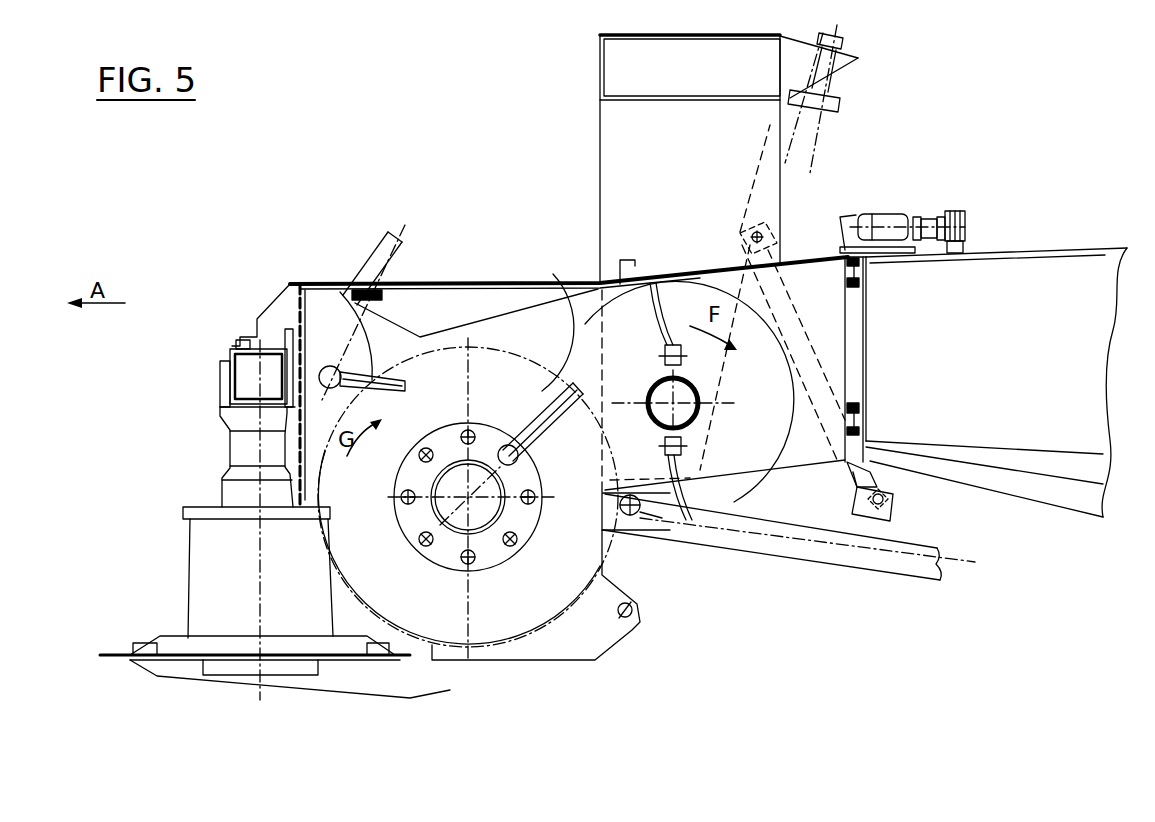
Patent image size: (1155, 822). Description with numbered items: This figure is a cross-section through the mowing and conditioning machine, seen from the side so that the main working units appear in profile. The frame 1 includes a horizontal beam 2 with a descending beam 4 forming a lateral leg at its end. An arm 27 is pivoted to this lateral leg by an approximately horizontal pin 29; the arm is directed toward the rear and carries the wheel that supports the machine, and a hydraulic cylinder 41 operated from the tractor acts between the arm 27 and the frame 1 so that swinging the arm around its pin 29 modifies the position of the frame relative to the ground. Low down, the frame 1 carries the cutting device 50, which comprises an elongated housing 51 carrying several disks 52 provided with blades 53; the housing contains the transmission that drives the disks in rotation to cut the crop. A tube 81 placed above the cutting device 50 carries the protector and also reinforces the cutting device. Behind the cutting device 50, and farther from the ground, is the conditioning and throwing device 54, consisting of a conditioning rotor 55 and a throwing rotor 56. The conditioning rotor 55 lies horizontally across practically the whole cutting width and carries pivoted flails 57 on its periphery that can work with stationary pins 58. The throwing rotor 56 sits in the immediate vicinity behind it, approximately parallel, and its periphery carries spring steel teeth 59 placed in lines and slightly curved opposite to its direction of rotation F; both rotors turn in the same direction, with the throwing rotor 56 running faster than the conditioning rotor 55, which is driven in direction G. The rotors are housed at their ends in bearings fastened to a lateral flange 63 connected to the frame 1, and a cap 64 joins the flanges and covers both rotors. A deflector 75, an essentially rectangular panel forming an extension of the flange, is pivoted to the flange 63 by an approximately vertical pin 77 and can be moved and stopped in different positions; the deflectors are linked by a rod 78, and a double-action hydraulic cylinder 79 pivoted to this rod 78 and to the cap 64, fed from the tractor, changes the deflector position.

The frame 1 is at (594, 72).
The horizontal beam 2 is at (618, 88).
The descending beam 4 is at (606, 172).
The arm 27 is at (880, 565).
The pin 29 is at (636, 525).
The hydraulic cylinder 41 is at (870, 462).
The cutting device 50 is at (180, 541).
The housing 51 is at (227, 670).
The disks 52 is at (188, 648).
The blades 53 is at (103, 654).
The conditioning and throwing device 54 is at (534, 642).
The conditioning rotor 55 is at (485, 535).
The throwing rotor 56 is at (703, 447).
The pivoted flails 57 is at (571, 330).
The stationary pins 58 is at (350, 298).
The spring steel teeth 59 is at (680, 480).
The lateral flange 63 is at (540, 333).
The cap 64 is at (447, 322).
The deflector 75 is at (1060, 257).
The pin 77 is at (863, 288).
The rod 78 is at (960, 216).
The hydraulic cylinder 79 is at (888, 222).
The tube 81 is at (233, 377).